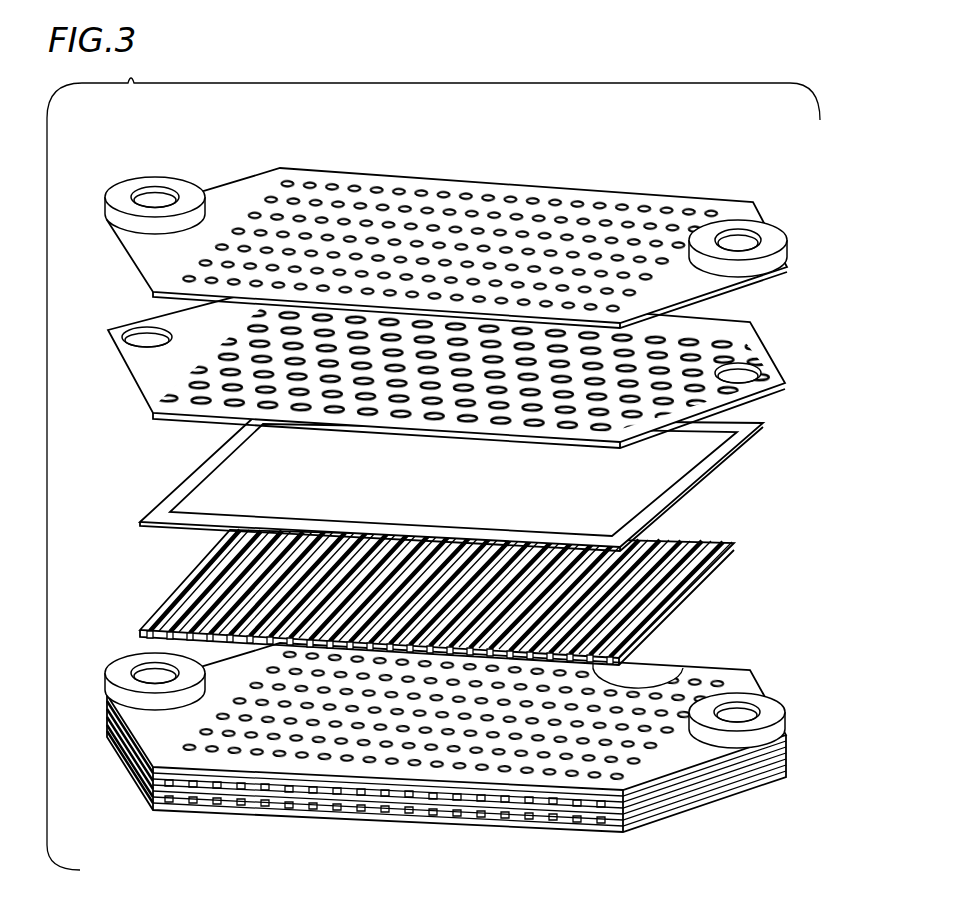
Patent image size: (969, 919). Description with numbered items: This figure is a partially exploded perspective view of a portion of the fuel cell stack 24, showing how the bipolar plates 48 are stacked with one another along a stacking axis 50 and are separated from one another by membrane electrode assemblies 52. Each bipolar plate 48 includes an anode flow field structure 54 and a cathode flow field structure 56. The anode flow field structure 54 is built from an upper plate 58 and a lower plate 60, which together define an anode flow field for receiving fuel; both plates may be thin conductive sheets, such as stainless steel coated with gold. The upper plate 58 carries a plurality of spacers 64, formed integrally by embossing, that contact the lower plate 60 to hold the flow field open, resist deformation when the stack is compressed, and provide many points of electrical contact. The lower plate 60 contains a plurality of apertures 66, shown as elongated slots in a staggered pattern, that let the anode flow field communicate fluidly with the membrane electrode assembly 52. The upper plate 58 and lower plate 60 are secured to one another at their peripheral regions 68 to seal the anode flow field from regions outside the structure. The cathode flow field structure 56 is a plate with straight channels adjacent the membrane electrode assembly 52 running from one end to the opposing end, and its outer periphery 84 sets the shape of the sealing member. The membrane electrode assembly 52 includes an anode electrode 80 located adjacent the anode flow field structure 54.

The fuel cell stack 24 is at (750, 829).
The bipolar plate 48 is at (197, 573).
The stacking axis 50 is at (450, 135).
The membrane electrode assembly 52 is at (158, 492).
The anode flow field structure 54 is at (124, 757).
The cathode flow field structure 56 is at (716, 587).
The upper plate 58 is at (622, 180).
The lower plate 60 is at (770, 323).
The spacers 64 is at (345, 219).
The apertures 66 is at (233, 402).
The peripheral regions 68 is at (772, 203).
The anode electrode 80 is at (687, 462).
The outer periphery 84 is at (670, 683).